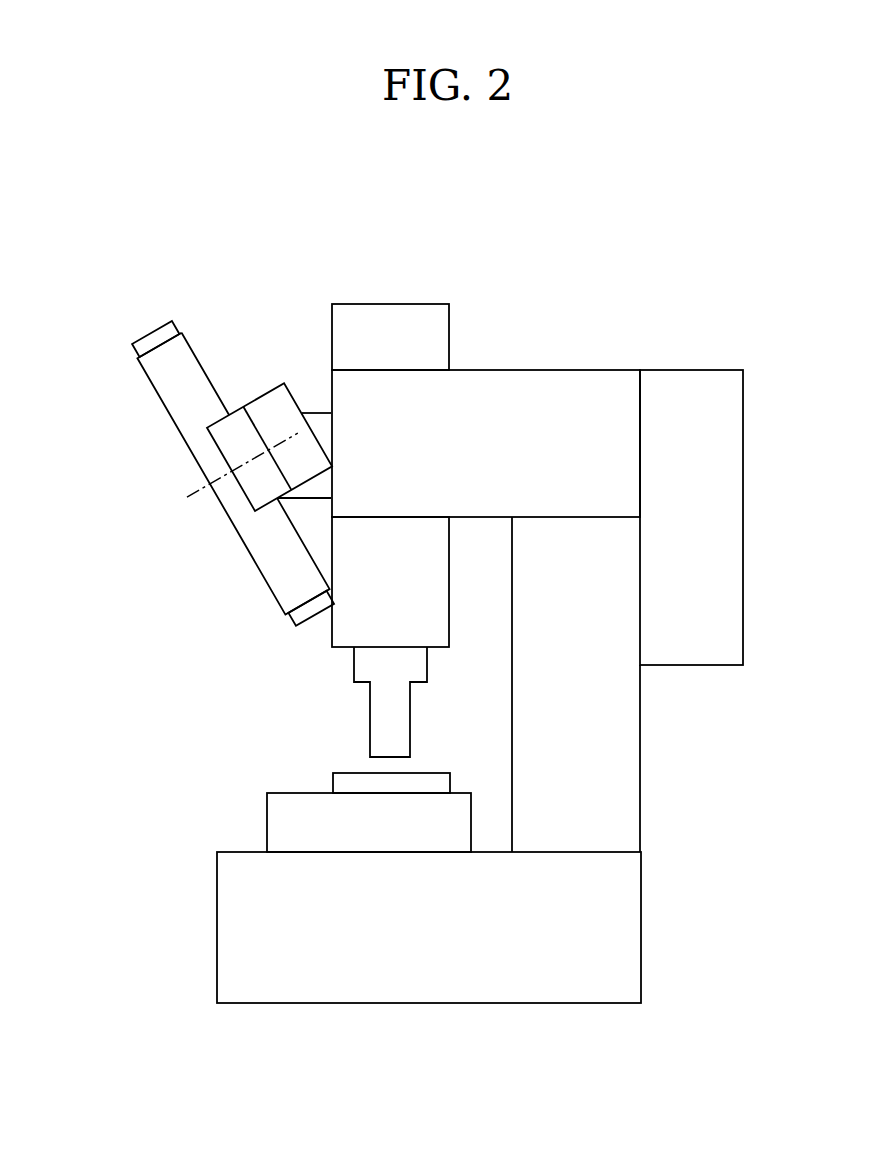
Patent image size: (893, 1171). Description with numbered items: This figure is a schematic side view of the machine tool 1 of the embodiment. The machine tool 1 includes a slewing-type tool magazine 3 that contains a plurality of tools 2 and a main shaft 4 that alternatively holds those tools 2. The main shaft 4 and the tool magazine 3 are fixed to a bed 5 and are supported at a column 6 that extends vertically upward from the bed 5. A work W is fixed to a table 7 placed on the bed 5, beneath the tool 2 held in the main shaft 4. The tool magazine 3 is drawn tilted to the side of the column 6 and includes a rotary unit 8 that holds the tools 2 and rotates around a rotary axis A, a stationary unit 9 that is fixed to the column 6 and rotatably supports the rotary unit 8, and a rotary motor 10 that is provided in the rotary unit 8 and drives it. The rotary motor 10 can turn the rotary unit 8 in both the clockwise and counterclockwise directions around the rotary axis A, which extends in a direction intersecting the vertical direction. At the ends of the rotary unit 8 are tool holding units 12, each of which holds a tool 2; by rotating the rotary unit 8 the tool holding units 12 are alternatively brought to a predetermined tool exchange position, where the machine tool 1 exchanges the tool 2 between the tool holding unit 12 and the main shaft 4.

The machine tool 1 is at (714, 230).
The tool 2 is at (410, 717).
The tool magazine 3 is at (109, 382).
The main shaft 4 is at (449, 580).
The bed 5 is at (217, 930).
The column 6 is at (640, 742).
The table 7 is at (267, 825).
The rotary unit 8 is at (245, 548).
The stationary unit 9 is at (308, 413).
The rotary motor 10 is at (256, 398).
The tool holding unit 12 is at (148, 332).
The work W is at (333, 780).
The rotary axis A is at (233, 475).